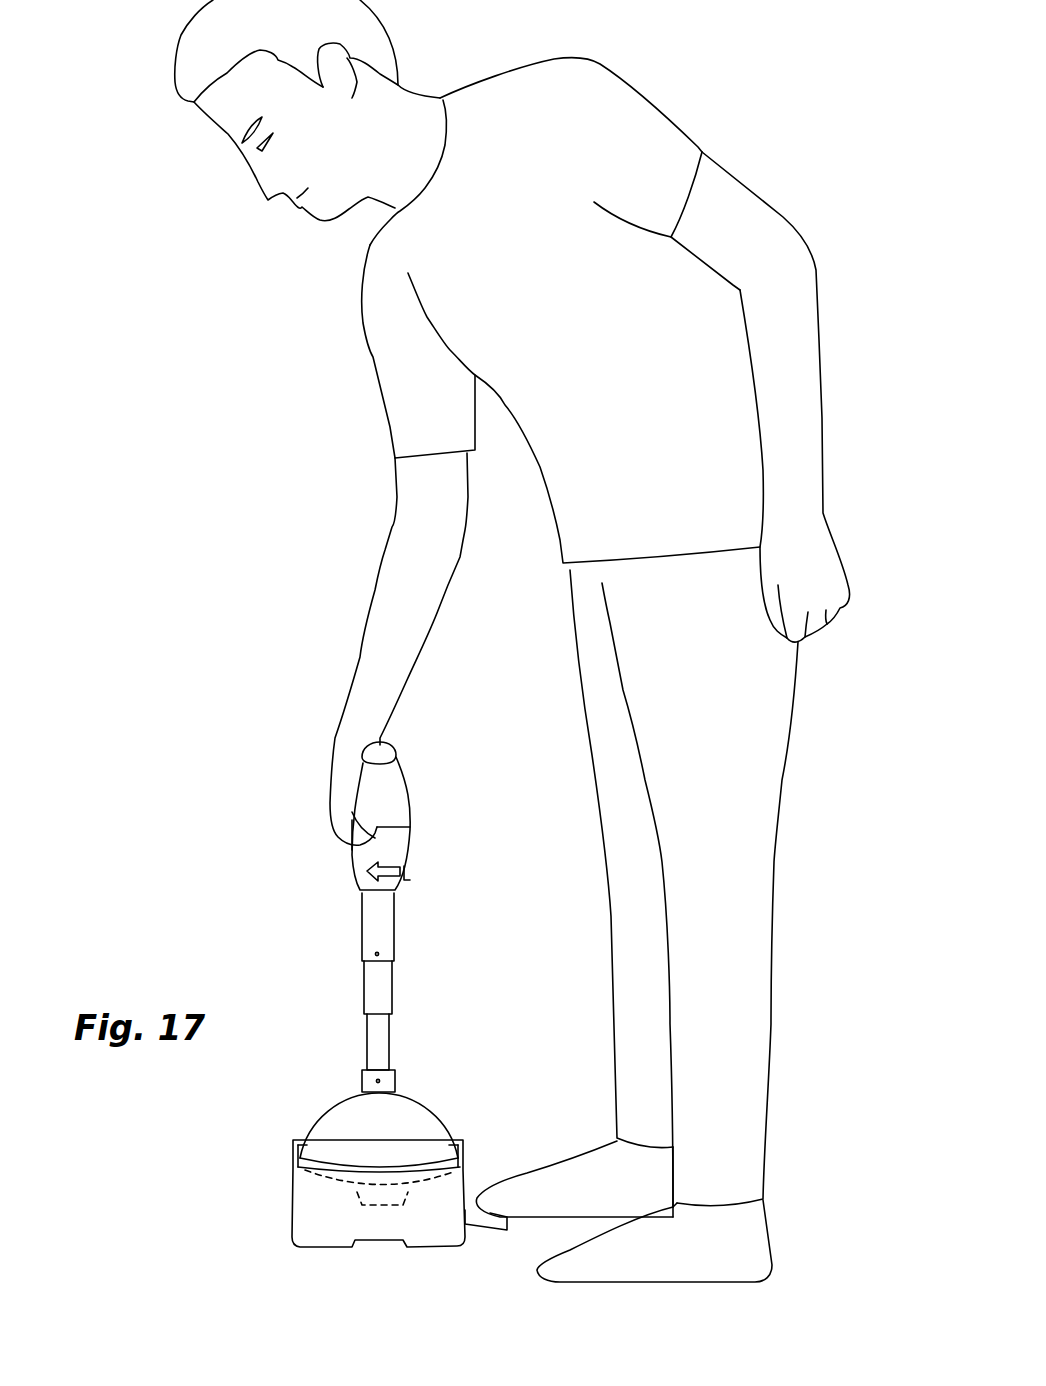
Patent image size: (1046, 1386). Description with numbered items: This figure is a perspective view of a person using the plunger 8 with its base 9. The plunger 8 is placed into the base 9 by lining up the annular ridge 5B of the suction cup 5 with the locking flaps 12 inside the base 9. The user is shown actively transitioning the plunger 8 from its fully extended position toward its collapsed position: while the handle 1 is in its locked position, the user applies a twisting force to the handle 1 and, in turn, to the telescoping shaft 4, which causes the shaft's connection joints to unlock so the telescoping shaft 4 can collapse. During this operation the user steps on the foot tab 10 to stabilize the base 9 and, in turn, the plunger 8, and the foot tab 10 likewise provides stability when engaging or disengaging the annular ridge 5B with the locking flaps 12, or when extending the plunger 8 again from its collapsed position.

The handle 1 is at (407, 791).
The telescoping shaft 4 is at (418, 972).
The suction cup 5 is at (420, 1108).
The annular ridge 5B is at (462, 1173).
The plunger 8 is at (263, 877).
The base 9 is at (296, 1195).
The foot tab 10 is at (488, 1230).
The locking flaps 12 is at (430, 1172).